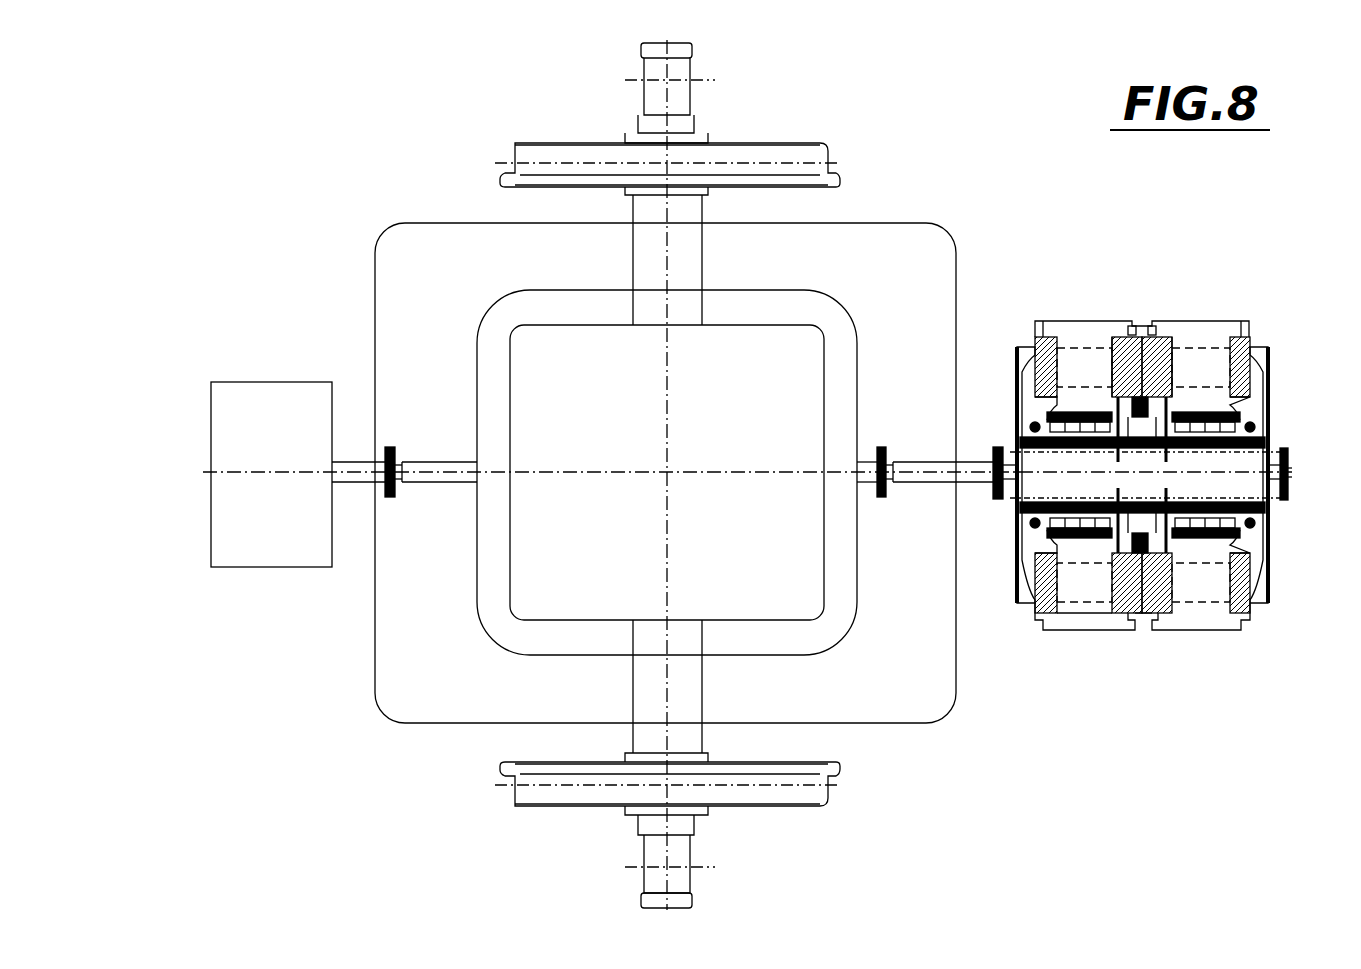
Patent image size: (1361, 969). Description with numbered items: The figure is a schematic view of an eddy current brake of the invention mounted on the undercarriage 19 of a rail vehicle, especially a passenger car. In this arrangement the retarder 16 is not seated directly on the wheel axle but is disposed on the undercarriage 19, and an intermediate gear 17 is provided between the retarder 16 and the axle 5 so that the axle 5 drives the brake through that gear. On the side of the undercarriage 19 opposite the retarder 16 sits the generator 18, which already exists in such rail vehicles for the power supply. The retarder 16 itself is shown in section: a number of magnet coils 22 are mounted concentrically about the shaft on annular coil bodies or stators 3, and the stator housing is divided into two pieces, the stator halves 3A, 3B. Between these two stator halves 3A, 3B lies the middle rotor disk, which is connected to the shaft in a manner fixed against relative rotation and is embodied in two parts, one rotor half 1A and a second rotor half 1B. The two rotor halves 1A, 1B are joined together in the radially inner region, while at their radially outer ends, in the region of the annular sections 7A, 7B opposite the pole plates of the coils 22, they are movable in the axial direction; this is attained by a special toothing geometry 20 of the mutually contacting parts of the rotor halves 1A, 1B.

The axle 5 is at (652, 212).
The undercarriage 19 is at (676, 448).
The intermediate gear 17 is at (530, 590).
The generator 18 is at (233, 504).
The magnet coils 22 is at (1045, 368).
The rotor half 1A is at (1128, 330).
The second rotor half 1B is at (1164, 355).
The annular section 7A is at (1115, 352).
The annular section 7B is at (1177, 350).
The stator half 3A is at (1070, 618).
The stator half 3B is at (1215, 618).
The stator 3 is at (1087, 618).
The retarder 16 is at (1108, 650).
The toothing geometry 20 is at (1161, 691).